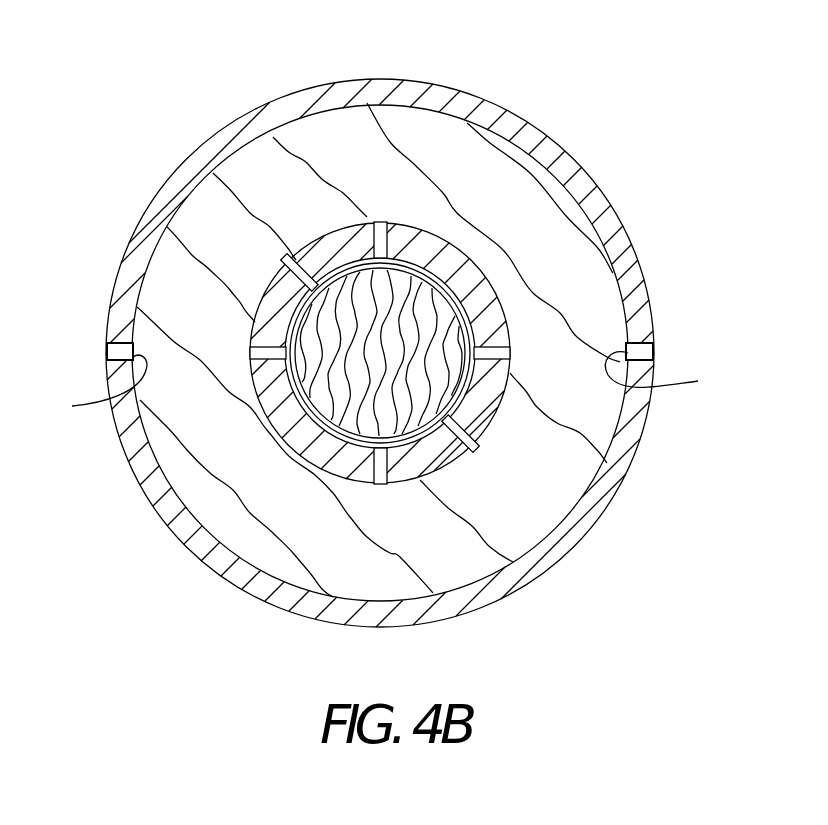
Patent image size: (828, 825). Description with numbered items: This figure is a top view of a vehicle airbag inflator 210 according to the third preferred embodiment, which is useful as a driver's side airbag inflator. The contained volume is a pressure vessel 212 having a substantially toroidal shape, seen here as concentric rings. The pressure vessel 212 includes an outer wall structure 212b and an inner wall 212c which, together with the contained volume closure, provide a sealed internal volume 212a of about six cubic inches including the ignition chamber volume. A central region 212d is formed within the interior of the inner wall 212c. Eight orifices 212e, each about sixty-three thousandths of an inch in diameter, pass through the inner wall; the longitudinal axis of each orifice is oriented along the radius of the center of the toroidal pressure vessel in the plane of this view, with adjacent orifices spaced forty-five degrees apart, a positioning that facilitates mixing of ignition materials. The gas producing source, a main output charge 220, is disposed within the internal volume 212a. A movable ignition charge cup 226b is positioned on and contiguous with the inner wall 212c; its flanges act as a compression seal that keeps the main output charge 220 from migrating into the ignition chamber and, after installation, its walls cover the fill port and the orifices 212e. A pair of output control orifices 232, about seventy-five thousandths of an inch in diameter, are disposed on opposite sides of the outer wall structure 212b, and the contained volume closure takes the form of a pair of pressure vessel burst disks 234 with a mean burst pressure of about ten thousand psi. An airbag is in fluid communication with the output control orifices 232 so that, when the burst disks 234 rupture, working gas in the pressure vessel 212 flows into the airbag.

The vehicle airbag inflator 210 is at (170, 129).
The pressure vessel 212 is at (600, 173).
The sealed internal volume 212a is at (575, 247).
The outer wall structure 212b is at (633, 271).
The inner wall 212c is at (422, 460).
The central region 212d is at (362, 422).
The orifices 212e is at (388, 224).
The main output charge 220 is at (573, 453).
The ignition charge cup 226b is at (337, 440).
The output control orifices 232 is at (107, 347).
The pressure vessel burst disks 234 is at (384, 389).